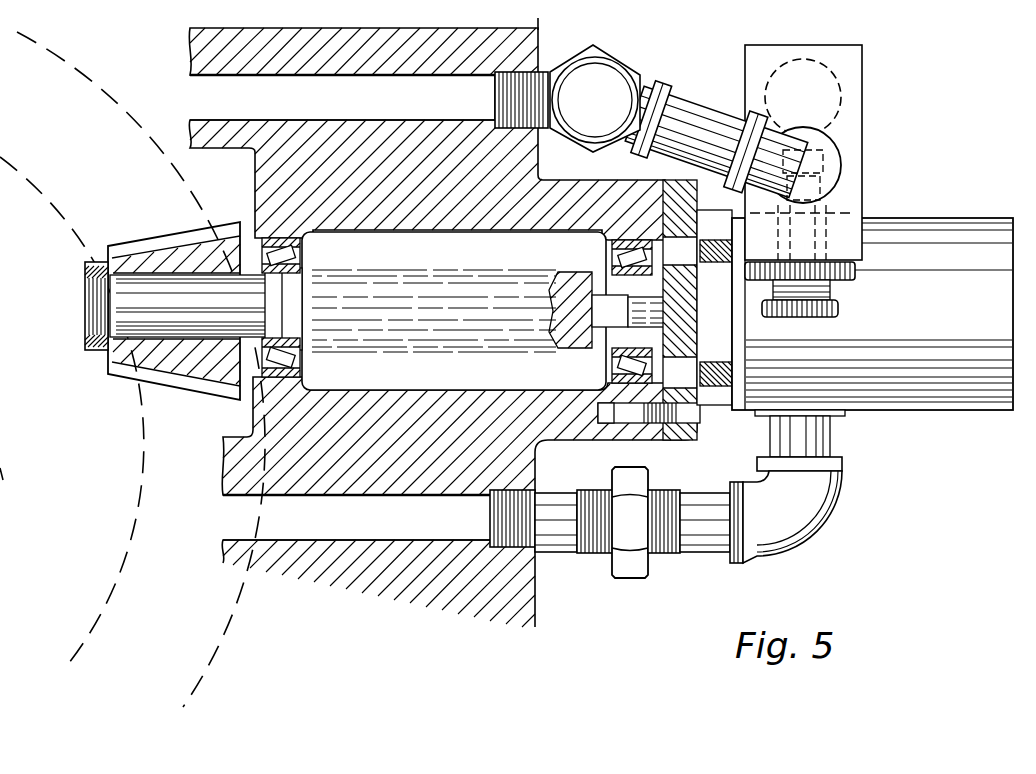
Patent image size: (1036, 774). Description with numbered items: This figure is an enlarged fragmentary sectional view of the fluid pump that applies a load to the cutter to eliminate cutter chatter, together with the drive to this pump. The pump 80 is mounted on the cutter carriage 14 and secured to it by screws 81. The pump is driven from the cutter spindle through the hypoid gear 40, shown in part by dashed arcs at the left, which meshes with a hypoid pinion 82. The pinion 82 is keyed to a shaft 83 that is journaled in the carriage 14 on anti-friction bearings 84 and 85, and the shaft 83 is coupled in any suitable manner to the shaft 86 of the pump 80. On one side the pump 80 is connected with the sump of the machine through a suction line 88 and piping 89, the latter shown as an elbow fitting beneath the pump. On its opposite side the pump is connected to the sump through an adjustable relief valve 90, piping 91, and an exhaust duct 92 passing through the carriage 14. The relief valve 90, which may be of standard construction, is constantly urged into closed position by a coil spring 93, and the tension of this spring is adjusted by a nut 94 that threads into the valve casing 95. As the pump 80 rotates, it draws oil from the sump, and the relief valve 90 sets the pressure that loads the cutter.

The cutter carriage 14 is at (283, 32).
The hypoid gear 40 is at (98, 115).
The pump 80 is at (938, 410).
The screws 81 is at (670, 440).
The hypoid pinion 82 is at (182, 377).
The shaft 83 is at (428, 283).
The anti-friction bearing 84 is at (263, 235).
The anti-friction bearing 85 is at (598, 423).
The pump shaft 86 is at (690, 230).
The suction line 88 is at (363, 527).
The piping 89 is at (783, 537).
The adjustable relief valve 90 is at (813, 167).
The piping 91 is at (690, 100).
The exhaust duct 92 is at (395, 88).
The coil spring 93 is at (800, 186).
The nut 94 is at (840, 305).
The valve casing 95 is at (853, 78).